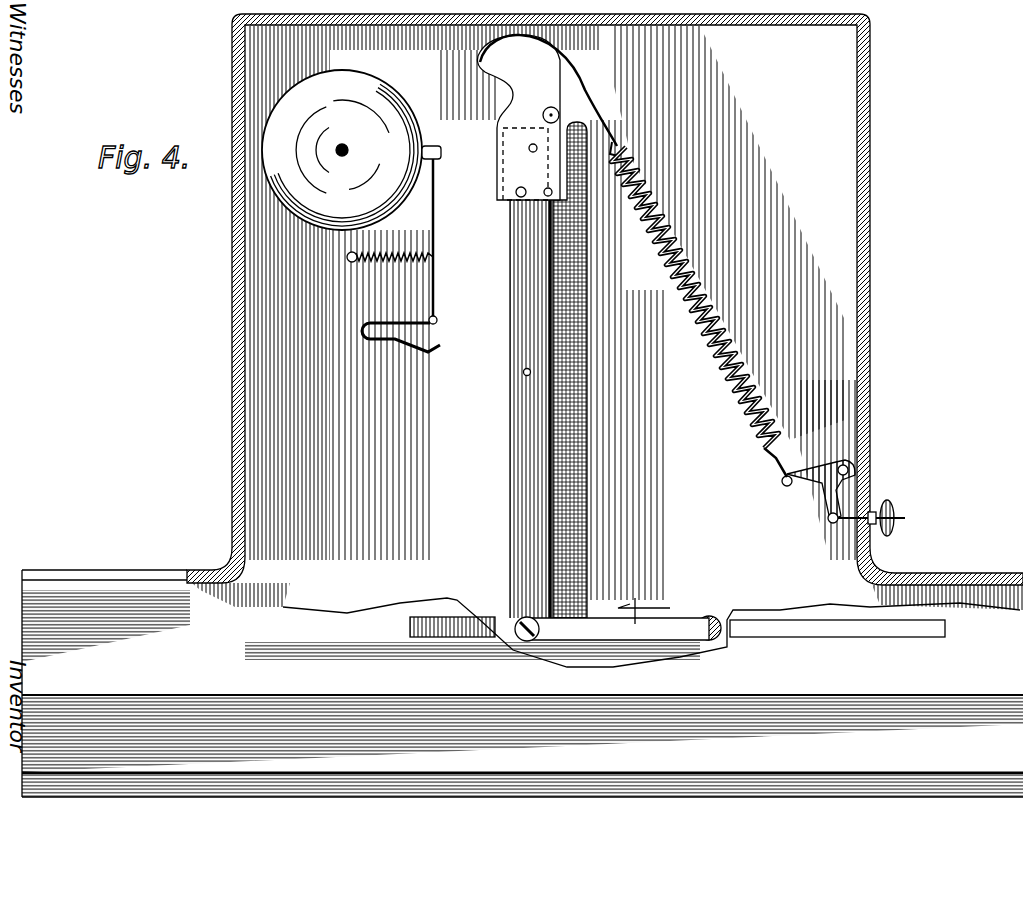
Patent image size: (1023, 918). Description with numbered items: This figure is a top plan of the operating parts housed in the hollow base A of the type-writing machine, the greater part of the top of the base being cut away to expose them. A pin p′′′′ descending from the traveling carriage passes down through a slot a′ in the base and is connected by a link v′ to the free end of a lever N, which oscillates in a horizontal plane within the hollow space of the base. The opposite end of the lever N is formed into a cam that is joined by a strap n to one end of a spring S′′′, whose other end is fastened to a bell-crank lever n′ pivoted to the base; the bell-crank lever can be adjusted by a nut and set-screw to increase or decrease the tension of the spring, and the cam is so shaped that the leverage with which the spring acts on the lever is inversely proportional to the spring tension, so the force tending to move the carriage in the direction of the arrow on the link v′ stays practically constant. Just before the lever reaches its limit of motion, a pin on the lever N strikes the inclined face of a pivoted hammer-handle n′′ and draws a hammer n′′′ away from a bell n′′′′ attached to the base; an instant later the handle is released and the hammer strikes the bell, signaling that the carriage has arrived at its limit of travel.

The base A is at (870, 186).
The strap n is at (512, 91).
The bell-crank lever n′ is at (441, 346).
The hammer-handle n′′ is at (437, 239).
The hammer n′′′ is at (441, 153).
The bell n′′′′ is at (342, 150).
The lever N is at (515, 418).
The pin p′′′′ is at (523, 373).
The spring S′′′ is at (673, 405).
The link v′ is at (562, 620).
The slot a′ is at (800, 630).